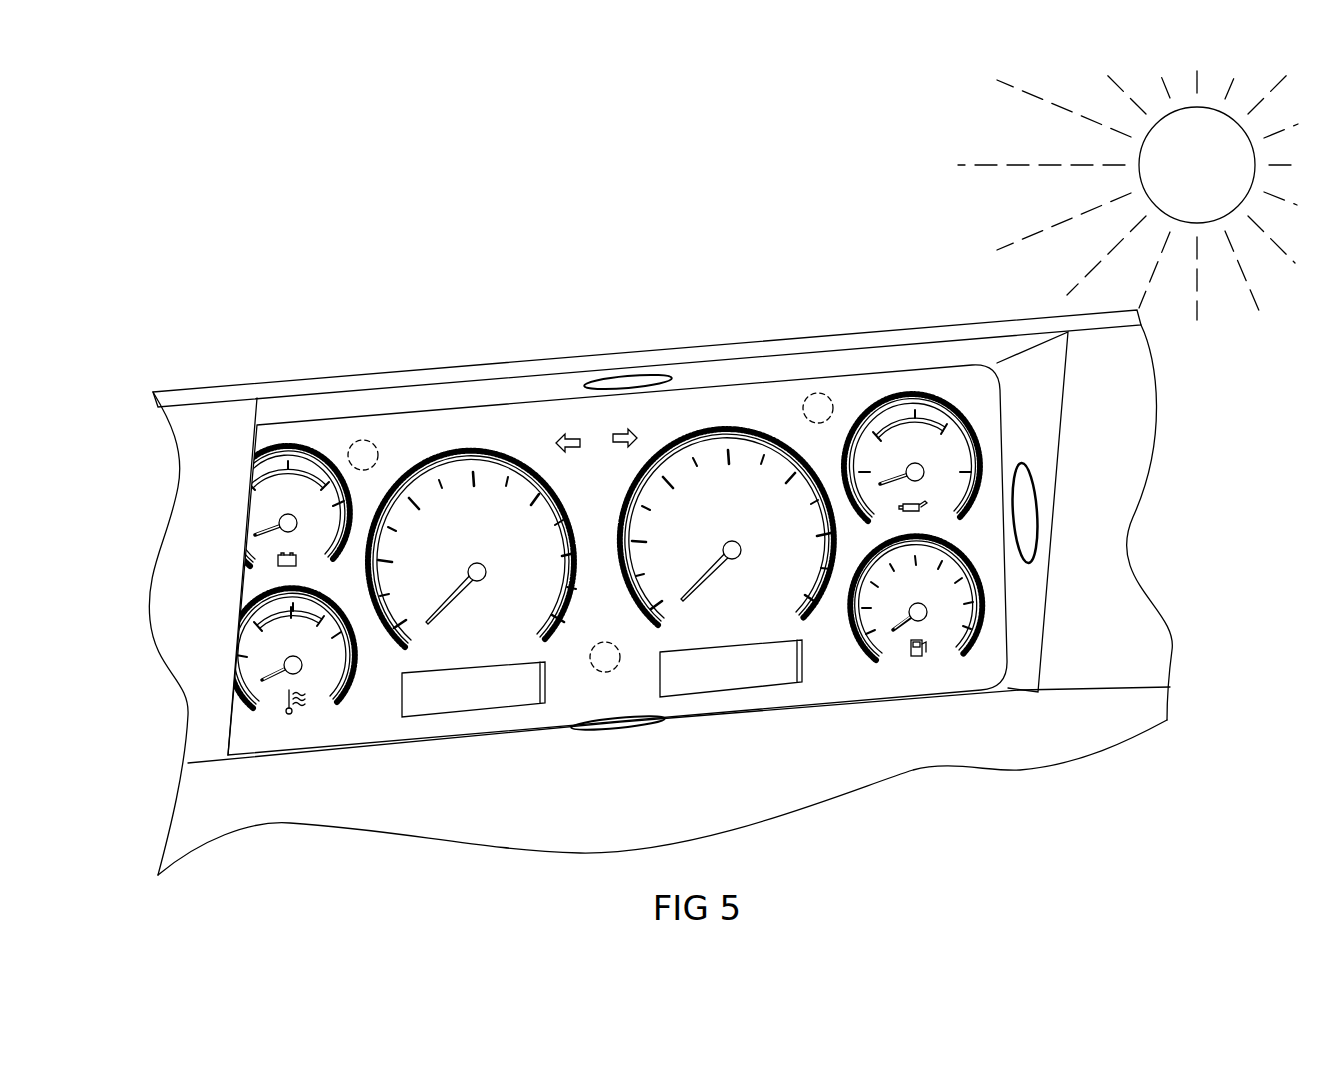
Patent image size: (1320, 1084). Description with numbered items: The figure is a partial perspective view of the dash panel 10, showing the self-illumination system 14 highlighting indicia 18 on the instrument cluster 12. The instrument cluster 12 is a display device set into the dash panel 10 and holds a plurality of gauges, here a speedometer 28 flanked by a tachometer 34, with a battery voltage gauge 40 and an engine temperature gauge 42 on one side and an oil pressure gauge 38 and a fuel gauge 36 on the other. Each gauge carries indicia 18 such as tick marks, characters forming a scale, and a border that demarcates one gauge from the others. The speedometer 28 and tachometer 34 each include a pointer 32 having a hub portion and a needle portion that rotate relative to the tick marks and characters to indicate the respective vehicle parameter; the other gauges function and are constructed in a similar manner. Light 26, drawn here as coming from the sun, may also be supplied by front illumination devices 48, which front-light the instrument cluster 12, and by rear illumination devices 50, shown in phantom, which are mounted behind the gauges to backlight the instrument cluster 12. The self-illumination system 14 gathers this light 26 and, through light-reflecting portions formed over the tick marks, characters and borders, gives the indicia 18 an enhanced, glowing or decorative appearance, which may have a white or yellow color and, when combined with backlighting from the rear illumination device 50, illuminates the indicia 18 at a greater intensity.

The dash panel 10 is at (185, 666).
The instrument cluster 12 is at (433, 443).
The self-illumination system 14 is at (602, 499).
The indicia 18 is at (474, 522).
The light 26 is at (1028, 233).
The speedometer 28 is at (480, 445).
The pointer 32 is at (486, 584).
The tachometer 34 is at (742, 420).
The fuel gauge 36 is at (944, 663).
The oil pressure gauge 38 is at (957, 388).
The battery voltage gauge 40 is at (248, 498).
The engine temperature gauge 42 is at (238, 680).
The front illumination device 48 is at (623, 383).
The rear illumination device 50 is at (355, 442).